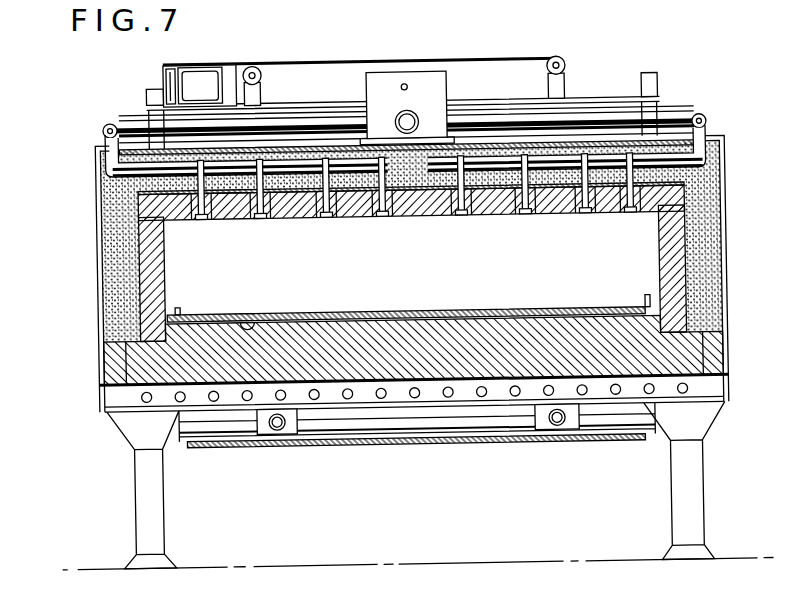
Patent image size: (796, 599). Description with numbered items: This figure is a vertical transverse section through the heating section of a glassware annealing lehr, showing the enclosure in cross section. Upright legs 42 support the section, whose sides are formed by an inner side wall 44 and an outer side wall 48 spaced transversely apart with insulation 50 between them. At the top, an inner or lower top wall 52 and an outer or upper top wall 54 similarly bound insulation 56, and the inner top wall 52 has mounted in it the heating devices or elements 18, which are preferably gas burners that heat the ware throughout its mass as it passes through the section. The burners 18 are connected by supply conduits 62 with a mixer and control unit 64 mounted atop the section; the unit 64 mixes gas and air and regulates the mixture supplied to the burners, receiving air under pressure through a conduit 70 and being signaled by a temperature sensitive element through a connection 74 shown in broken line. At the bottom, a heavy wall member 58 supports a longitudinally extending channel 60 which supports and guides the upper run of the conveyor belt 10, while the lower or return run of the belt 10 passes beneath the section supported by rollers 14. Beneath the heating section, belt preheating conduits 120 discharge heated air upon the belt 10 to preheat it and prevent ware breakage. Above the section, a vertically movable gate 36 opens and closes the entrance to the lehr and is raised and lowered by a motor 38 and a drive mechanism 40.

The conveyor belt 10 is at (306, 312).
The rollers 14 is at (422, 430).
The heating devices or elements 18 is at (262, 218).
The gate 36 is at (299, 139).
The motor 38 is at (203, 72).
The drive mechanism 40 is at (254, 65).
The upright legs 42 is at (140, 490).
The inner side wall 44 is at (166, 271).
The outer side wall 48 is at (98, 241).
The insulation 50 is at (115, 280).
The inner or lower top wall 52 is at (432, 217).
The outer or upper top wall 54 is at (495, 147).
The insulation 56 is at (592, 149).
The heavy wall member 58 is at (363, 332).
The channel 60 is at (248, 314).
The supply conduits 62 is at (138, 123).
The mixer and control unit 64 is at (422, 76).
The conduit 70 is at (413, 120).
The connection 74 is at (408, 83).
The belt preheating conduits 120 is at (273, 433).